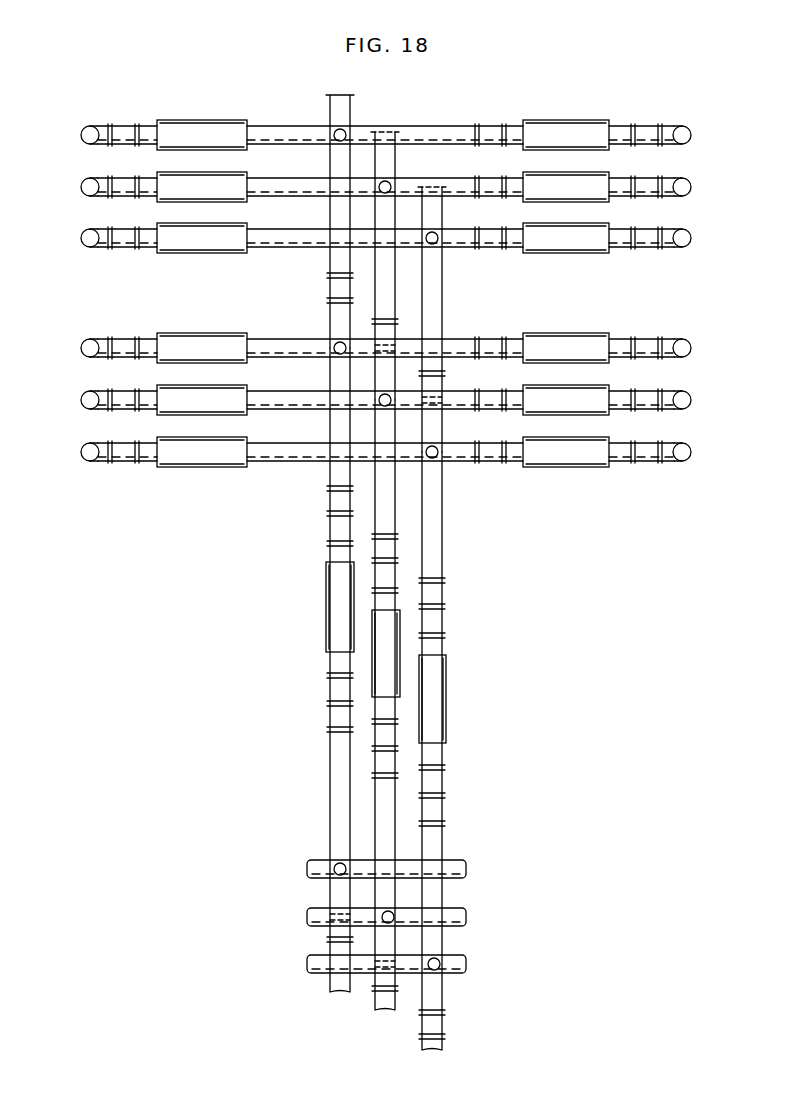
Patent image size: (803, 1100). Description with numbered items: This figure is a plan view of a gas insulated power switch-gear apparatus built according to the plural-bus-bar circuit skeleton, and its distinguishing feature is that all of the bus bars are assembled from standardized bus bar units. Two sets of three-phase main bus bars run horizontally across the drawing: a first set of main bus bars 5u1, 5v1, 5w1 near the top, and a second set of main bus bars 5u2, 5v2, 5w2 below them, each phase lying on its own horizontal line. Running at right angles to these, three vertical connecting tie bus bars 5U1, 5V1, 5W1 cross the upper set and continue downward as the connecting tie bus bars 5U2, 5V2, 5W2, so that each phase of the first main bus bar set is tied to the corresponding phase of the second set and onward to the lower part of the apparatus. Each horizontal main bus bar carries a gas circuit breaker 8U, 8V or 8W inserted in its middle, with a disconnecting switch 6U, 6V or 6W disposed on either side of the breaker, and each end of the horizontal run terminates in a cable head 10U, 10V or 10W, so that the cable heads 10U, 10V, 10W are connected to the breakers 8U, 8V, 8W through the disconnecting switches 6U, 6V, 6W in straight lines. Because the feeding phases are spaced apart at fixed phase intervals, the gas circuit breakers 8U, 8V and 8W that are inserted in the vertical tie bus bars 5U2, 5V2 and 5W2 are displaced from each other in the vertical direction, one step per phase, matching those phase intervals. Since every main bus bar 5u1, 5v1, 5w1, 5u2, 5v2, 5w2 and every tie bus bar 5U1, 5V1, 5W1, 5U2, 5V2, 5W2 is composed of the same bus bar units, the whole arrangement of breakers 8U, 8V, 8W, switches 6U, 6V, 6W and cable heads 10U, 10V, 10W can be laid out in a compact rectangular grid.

The main bus bar 5u1 is at (419, 130).
The main bus bar 5v1 is at (406, 182).
The main bus bar 5w1 is at (450, 232).
The main bus bar 5u2 is at (468, 344).
The main bus bar 5v2 is at (457, 394).
The main bus bar 5w2 is at (457, 448).
The connecting tie bus bar 5U1 is at (330, 268).
The connecting tie bus bar 5V1 is at (388, 291).
The connecting tie bus bar 5W1 is at (440, 272).
The connecting tie bus bar 5U2 is at (330, 470).
The connecting tie bus bar 5V2 is at (386, 506).
The connecting tie bus bar 5W2 is at (438, 485).
The disconnecting switch 6U is at (117, 126).
The disconnecting switch 6V is at (117, 178).
The disconnecting switch 6W is at (117, 229).
The gas circuit breaker 8U is at (200, 128).
The gas circuit breaker 8V is at (200, 180).
The gas circuit breaker 8W is at (200, 231).
The cable head 10U is at (80, 135).
The cable head 10V is at (80, 187).
The cable head 10W is at (82, 238).